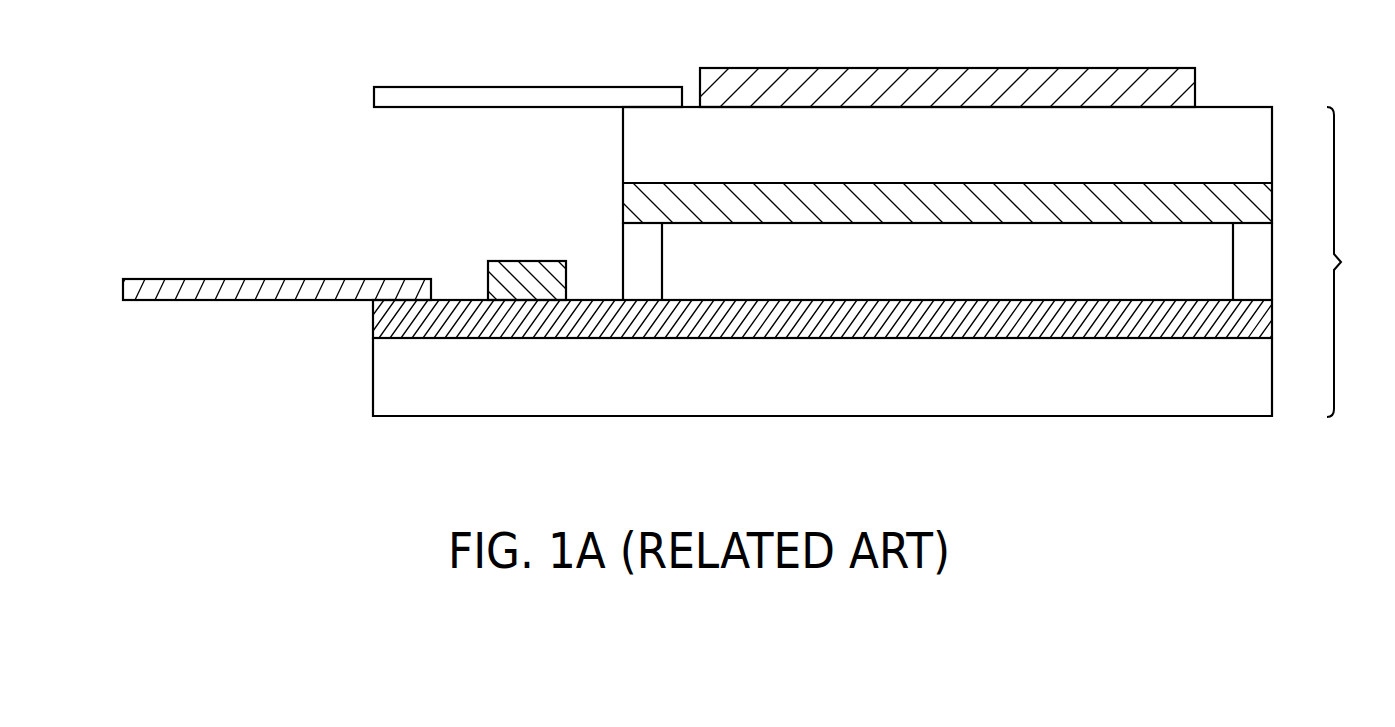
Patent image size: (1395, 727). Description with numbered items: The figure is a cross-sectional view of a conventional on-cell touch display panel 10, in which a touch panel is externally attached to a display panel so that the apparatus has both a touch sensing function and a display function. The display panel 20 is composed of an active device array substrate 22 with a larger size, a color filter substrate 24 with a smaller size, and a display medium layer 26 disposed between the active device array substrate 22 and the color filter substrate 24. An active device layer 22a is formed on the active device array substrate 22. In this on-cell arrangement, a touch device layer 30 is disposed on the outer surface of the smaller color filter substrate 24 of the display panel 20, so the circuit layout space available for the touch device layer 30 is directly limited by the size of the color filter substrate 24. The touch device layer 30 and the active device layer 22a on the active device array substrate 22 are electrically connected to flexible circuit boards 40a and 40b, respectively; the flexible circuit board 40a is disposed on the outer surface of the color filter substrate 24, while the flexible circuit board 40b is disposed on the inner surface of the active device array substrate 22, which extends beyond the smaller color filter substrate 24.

The on-cell touch display panel 10 is at (1284, 530).
The display panel 20 is at (1351, 262).
The active device array substrate 22 is at (1265, 384).
The active device layer 22a is at (1263, 318).
The color filter substrate 24 is at (1265, 148).
The display medium layer 26 is at (1225, 262).
The touch device layer 30 is at (1192, 83).
The flexible circuit board 40a is at (383, 97).
The flexible circuit board 40b is at (127, 288).